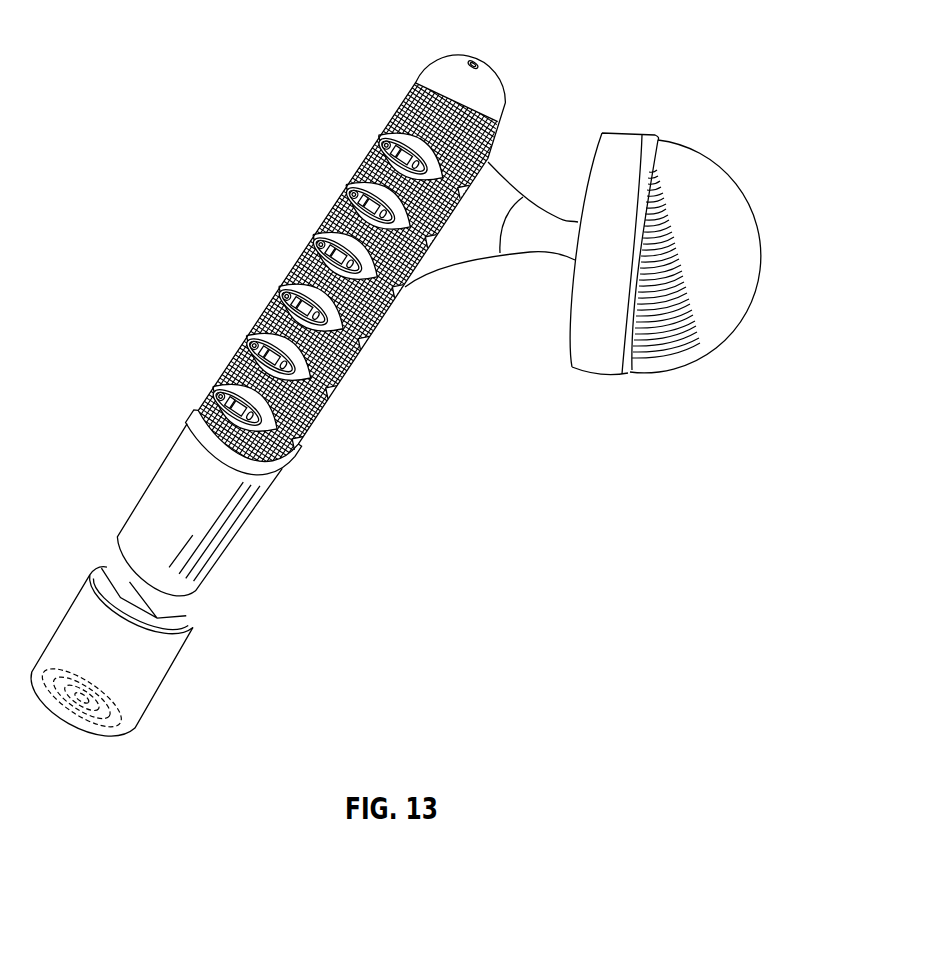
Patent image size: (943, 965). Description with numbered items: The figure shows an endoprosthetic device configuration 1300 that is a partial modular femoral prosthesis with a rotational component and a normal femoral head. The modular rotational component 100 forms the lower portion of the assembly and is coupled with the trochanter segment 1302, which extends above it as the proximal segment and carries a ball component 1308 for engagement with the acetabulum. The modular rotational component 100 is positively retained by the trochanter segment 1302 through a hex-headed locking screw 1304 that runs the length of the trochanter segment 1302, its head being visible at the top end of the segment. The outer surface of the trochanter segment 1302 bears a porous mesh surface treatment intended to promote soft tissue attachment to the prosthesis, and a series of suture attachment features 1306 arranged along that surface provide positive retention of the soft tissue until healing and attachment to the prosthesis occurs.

The endoprosthetic device configuration 1300 is at (351, 41).
The trochanter segment 1302 is at (399, 297).
The hex-headed locking screw 1304 is at (485, 67).
The suture attachment features 1306 is at (383, 137).
The ball component 1308 is at (705, 185).
The modular rotational component 100 is at (140, 524).